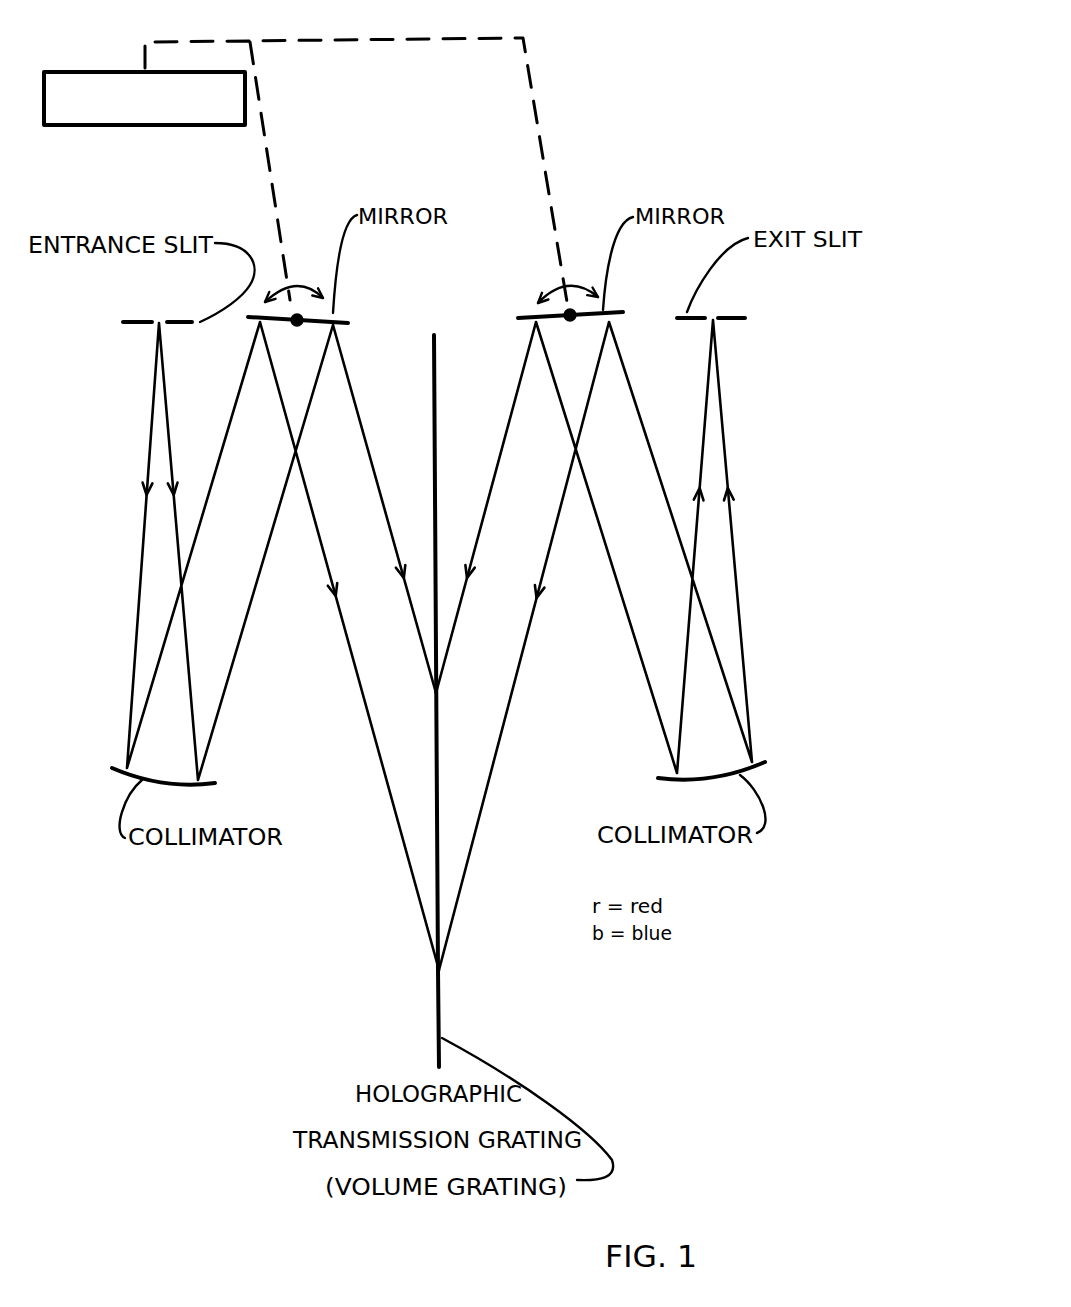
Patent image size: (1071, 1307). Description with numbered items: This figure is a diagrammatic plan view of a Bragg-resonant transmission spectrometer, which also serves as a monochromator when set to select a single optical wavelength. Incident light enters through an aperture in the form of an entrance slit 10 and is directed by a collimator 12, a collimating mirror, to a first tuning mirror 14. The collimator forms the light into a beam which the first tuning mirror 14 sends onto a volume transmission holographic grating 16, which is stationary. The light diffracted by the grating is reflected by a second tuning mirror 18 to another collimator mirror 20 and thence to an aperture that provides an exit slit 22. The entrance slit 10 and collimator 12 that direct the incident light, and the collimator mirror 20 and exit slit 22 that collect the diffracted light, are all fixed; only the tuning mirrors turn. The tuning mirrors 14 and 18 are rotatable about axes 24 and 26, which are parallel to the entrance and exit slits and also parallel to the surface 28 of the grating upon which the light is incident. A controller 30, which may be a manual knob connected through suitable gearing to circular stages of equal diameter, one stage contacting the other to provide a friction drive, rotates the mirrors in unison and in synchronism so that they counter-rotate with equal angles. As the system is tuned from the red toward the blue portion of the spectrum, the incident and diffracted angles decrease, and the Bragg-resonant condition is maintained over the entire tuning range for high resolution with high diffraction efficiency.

The entrance slit 10 is at (168, 320).
The collimator 12 is at (210, 775).
The first tuning mirror 14 is at (337, 312).
The volume transmission holographic grating 16 is at (443, 1023).
The second tuning mirror 18 is at (607, 307).
The collimator mirror 20 is at (773, 757).
The exit slit 22 is at (732, 308).
The axis 24 is at (305, 327).
The axis 26 is at (578, 325).
The surface of the grating 28 is at (434, 437).
The controller 30 is at (104, 66).